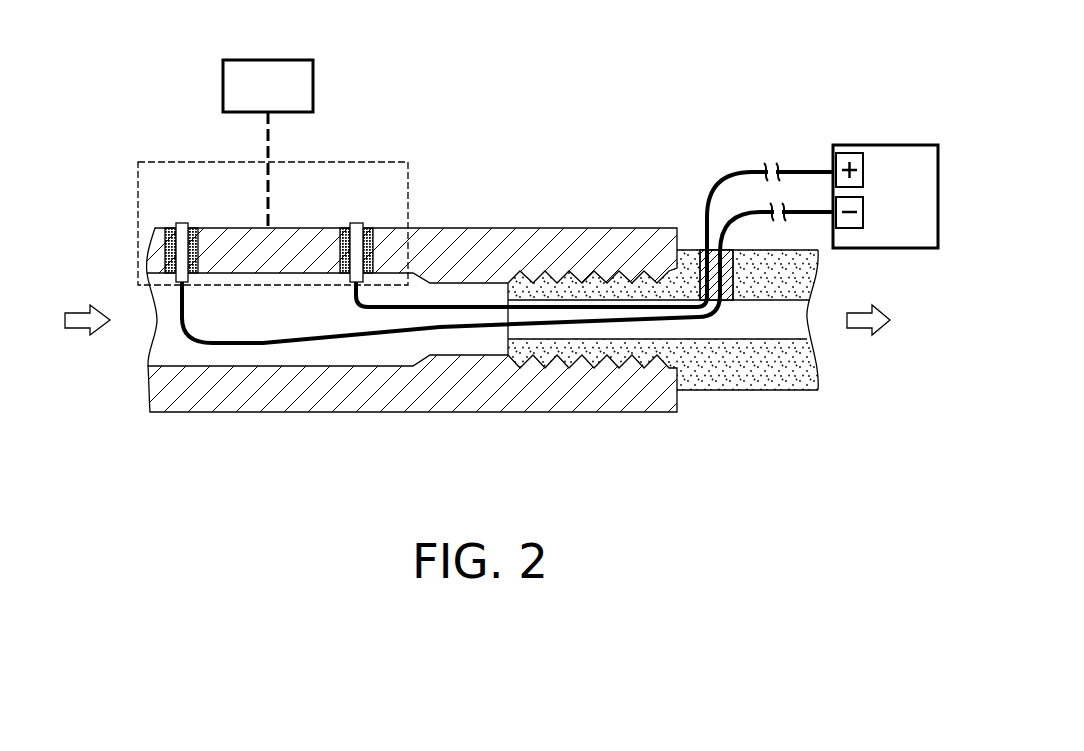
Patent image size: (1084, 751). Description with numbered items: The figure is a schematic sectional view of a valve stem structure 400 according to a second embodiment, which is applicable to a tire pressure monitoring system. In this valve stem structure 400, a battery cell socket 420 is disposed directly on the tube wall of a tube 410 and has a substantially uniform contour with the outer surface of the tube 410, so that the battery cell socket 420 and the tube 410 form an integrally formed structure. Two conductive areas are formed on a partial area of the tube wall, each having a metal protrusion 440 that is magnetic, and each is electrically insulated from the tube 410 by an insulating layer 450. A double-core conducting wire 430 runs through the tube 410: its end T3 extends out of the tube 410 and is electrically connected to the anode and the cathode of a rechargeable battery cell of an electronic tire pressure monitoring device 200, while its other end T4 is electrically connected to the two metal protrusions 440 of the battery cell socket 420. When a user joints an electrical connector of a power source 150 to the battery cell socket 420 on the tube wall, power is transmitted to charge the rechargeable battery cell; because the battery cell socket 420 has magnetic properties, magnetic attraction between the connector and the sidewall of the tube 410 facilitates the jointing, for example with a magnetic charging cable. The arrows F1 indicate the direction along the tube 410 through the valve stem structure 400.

The valve stem structure 400 is at (138, 121).
The tube 410 is at (500, 228).
The battery cell socket 420 is at (138, 196).
The conducting wire 430 is at (712, 322).
The metal protrusion 440 is at (185, 221).
The insulating layer 450 is at (193, 226).
The power source 150 is at (268, 144).
The electronic tire pressure monitoring device 200 is at (885, 196).
The end of conducting wire T3 is at (815, 207).
The another end of conducting wire T4 is at (346, 298).
The fluid flow direction F1 is at (73, 330).